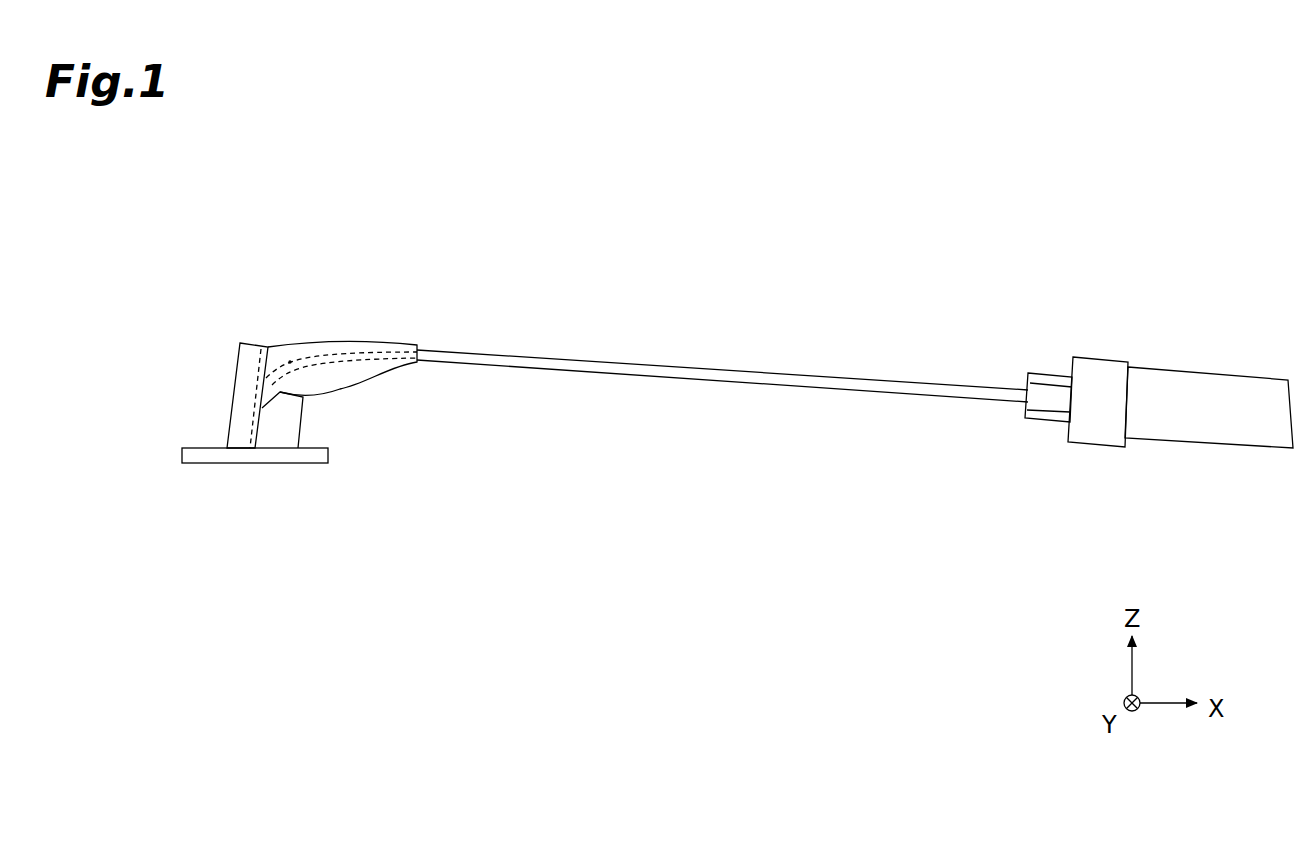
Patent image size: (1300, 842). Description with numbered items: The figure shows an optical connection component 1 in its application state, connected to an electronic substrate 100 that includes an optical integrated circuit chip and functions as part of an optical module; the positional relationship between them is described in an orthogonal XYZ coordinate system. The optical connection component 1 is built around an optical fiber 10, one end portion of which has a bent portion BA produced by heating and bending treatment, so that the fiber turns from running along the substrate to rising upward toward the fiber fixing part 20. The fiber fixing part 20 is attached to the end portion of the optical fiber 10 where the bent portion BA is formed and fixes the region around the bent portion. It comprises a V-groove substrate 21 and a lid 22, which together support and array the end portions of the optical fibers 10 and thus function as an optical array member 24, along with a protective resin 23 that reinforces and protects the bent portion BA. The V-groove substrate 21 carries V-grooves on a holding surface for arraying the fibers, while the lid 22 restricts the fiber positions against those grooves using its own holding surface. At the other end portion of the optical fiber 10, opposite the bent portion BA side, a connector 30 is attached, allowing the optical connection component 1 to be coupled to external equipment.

The optical connection component 1 is at (990, 265).
The optical fiber 10 is at (572, 357).
The fiber fixing part 20 is at (208, 322).
The V-groove substrate 21 is at (230, 415).
The lid 22 is at (303, 422).
The protective resin 23 is at (313, 342).
The optical array member 24 is at (218, 376).
The bent portion BA is at (289, 357).
The connector 30 is at (1215, 370).
The electronic substrate 100 is at (308, 464).